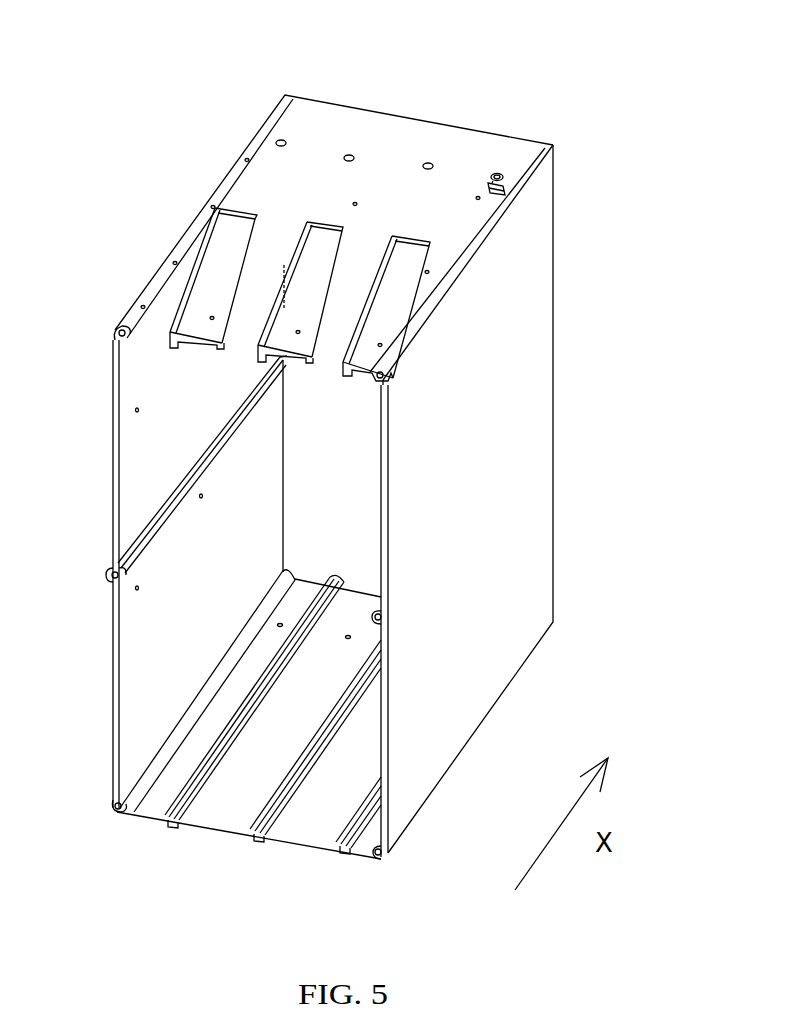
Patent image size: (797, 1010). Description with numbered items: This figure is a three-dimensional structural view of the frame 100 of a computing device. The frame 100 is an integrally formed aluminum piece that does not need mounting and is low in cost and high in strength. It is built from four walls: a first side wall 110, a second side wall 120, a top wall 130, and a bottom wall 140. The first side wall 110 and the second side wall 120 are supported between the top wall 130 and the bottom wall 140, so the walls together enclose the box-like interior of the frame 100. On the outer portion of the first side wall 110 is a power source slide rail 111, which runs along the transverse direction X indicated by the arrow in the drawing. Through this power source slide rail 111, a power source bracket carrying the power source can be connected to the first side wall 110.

The frame 100 is at (122, 50).
The first side wall 110 is at (135, 645).
The power source slide rail 111 is at (108, 570).
The second side wall 120 is at (525, 410).
The top wall 130 is at (470, 170).
The bottom wall 140 is at (313, 828).